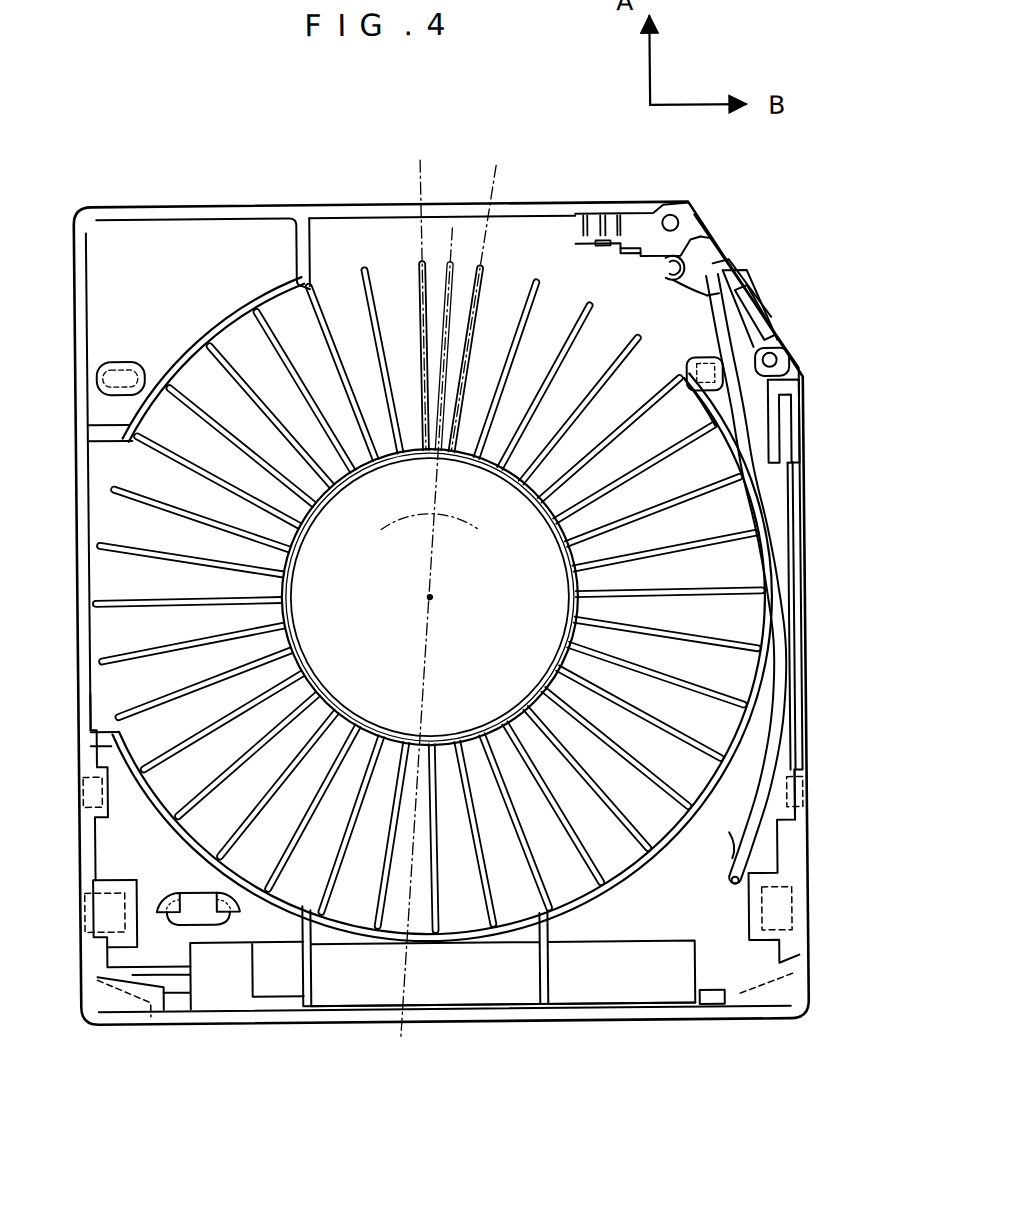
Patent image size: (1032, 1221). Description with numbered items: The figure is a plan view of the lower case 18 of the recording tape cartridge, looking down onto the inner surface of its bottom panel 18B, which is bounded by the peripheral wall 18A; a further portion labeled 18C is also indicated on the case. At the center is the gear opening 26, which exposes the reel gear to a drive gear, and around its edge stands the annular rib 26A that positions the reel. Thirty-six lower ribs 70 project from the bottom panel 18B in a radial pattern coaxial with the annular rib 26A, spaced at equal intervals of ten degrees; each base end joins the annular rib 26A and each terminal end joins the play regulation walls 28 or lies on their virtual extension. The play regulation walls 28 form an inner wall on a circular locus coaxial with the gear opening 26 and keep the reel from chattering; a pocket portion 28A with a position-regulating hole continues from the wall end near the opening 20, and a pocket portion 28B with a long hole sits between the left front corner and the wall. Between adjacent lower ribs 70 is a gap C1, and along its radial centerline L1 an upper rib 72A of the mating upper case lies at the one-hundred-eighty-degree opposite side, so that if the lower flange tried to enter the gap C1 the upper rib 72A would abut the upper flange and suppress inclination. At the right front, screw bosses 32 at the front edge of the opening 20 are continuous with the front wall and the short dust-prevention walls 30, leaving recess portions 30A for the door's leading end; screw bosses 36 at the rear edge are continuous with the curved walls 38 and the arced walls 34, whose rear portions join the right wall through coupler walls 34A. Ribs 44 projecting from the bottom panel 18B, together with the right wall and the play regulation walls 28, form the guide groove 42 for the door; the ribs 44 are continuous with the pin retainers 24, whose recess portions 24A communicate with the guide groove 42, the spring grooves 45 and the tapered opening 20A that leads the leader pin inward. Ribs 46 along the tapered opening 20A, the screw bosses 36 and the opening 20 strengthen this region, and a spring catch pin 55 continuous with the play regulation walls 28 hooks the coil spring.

The lower case 18 is at (188, 120).
The peripheral wall 18A is at (241, 204).
The bottom panel 18B is at (348, 905).
The compartment wall 18C is at (611, 1006).
The opening 20 is at (786, 342).
The tapered opening 20A is at (750, 299).
The pin retainers 24 is at (664, 282).
The recess portions 24A is at (690, 369).
The gear opening 26 is at (497, 603).
The annular rib 26A is at (291, 656).
The play regulation walls 28 is at (239, 312).
The pocket portion 28A is at (692, 388).
The pocket portion 28B is at (128, 357).
The dust-prevention walls 30 is at (694, 213).
The recess portions 30A is at (709, 243).
The screw bosses 32 is at (659, 212).
The arced walls 34 is at (792, 447).
The coupler walls 34A is at (789, 474).
The screw bosses 36 is at (780, 365).
The curved walls 38 is at (792, 372).
The guide grooves 42 is at (745, 270).
The ribs 44 is at (716, 258).
The spring grooves 45 is at (650, 255).
The ribs 46 is at (762, 316).
The spring catch pin 55 is at (789, 739).
The lower ribs 70 is at (484, 280).
The upper ribs 72A is at (423, 286).
The centerline L1 is at (418, 813).
The gap C1 is at (414, 1068).